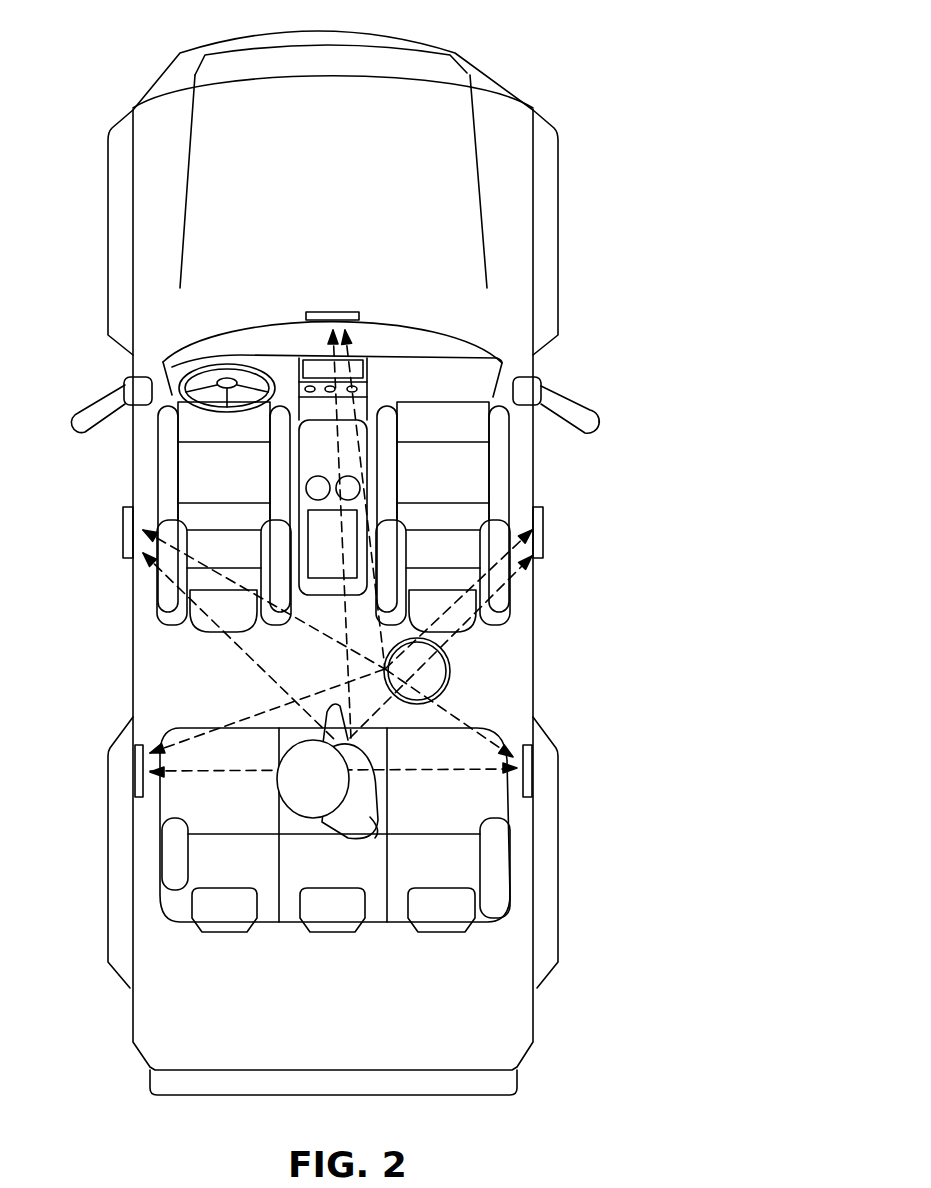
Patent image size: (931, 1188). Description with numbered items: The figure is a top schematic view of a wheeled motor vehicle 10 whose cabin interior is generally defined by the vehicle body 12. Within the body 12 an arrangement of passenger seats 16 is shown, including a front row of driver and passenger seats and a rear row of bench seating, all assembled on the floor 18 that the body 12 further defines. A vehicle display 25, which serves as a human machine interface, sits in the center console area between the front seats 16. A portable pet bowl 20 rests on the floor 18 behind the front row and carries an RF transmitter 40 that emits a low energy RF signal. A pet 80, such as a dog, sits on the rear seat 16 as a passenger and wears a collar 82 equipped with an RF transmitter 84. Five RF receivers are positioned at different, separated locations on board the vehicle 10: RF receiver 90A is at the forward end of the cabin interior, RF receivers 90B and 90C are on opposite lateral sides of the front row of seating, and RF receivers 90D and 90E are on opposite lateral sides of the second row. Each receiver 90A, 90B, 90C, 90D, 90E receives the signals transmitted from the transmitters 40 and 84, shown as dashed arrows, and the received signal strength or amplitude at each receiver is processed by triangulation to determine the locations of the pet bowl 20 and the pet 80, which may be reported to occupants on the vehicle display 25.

The vehicle 10 is at (522, 70).
The vehicle body 12 is at (533, 670).
The passenger seats 16 is at (217, 475).
The floor 18 is at (213, 675).
The pet bowl 20 is at (453, 658).
The vehicle display 25 is at (305, 365).
The RF transmitter 40 is at (385, 669).
The pet 80 is at (293, 823).
The collar 82 is at (378, 828).
The RF transmitter 84 is at (372, 800).
The RF receiver 90A is at (336, 312).
The RF receiver 90B is at (123, 538).
The RF receiver 90C is at (545, 540).
The RF receiver 90D is at (135, 775).
The RF receiver 90E is at (533, 770).